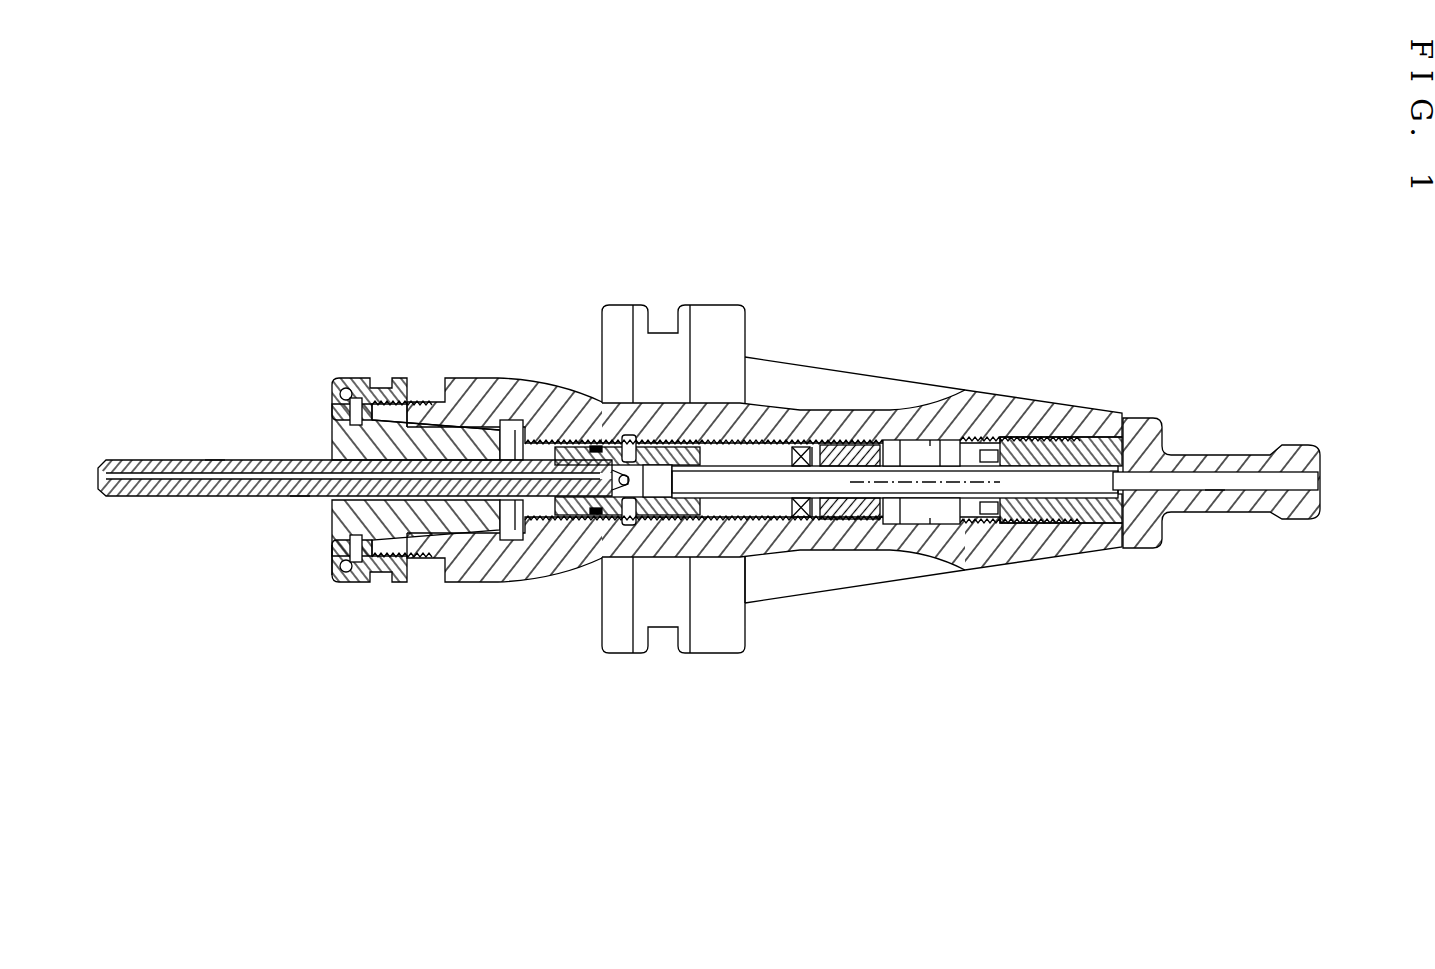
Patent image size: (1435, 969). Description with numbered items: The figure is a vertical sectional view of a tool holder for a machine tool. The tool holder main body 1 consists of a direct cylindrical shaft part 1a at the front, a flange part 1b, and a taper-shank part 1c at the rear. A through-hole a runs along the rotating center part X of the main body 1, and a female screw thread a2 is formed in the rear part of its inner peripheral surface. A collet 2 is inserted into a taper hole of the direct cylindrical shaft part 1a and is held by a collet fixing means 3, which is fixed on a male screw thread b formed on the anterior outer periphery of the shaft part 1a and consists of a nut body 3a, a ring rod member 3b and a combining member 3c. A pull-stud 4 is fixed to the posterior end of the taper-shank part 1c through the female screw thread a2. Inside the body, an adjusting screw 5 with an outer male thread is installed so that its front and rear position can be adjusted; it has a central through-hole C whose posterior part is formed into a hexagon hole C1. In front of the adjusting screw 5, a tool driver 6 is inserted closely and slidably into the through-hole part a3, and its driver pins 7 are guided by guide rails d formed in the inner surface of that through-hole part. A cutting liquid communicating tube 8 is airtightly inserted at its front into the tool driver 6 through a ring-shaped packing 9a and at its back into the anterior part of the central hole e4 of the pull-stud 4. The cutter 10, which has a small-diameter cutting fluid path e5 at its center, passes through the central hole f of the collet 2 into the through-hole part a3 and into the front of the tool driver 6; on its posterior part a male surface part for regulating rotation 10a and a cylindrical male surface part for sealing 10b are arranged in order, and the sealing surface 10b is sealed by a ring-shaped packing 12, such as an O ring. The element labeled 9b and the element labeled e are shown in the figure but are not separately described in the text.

The tool holder main body 1 is at (710, 282).
The direct cylindrical shaft part 1a is at (530, 395).
The flange part 1b is at (712, 652).
The taper-shank part 1c is at (900, 395).
The collet 2 is at (485, 558).
The collet fixing means 3 is at (377, 372).
The nut body 3a is at (352, 584).
The ring rod member 3b is at (343, 384).
The combining member 3c is at (330, 412).
The pull-stud 4 is at (1232, 453).
The adjusting screw 5 is at (780, 465).
The tool driver 6 is at (700, 462).
The driver pin 7 is at (637, 440).
The cutting liquid communicating tube 8 is at (860, 521).
The ring-shaped packing 9a is at (716, 505).
The lock nut 9b is at (992, 440).
The cutter 10 is at (162, 499).
The male surface part for regulating rotation 10a is at (578, 455).
The cylindrical male surface part for sealing 10b is at (605, 505).
The ring-shaped packing 12 is at (618, 455).
The through-hole a is at (940, 445).
The female screw thread a2 is at (988, 521).
The through-hole part a3 is at (492, 400).
The male screw thread b is at (405, 572).
The through-hole C is at (766, 500).
The hexagon hole C1 is at (815, 520).
The guide rail d is at (590, 432).
The bore e is at (660, 624).
The central hole e4 is at (1215, 492).
The cutting fluid path e5 is at (215, 458).
The central hole f is at (300, 499).
The rotating center part X is at (930, 521).